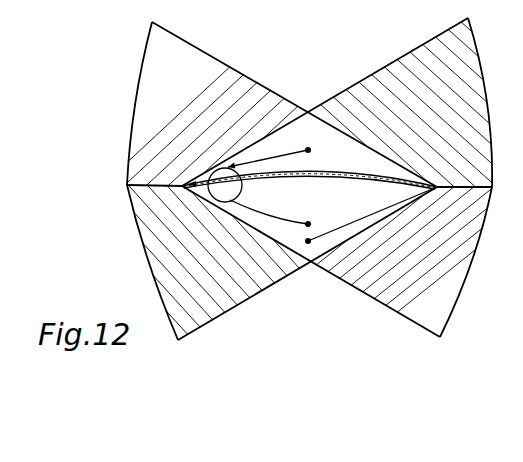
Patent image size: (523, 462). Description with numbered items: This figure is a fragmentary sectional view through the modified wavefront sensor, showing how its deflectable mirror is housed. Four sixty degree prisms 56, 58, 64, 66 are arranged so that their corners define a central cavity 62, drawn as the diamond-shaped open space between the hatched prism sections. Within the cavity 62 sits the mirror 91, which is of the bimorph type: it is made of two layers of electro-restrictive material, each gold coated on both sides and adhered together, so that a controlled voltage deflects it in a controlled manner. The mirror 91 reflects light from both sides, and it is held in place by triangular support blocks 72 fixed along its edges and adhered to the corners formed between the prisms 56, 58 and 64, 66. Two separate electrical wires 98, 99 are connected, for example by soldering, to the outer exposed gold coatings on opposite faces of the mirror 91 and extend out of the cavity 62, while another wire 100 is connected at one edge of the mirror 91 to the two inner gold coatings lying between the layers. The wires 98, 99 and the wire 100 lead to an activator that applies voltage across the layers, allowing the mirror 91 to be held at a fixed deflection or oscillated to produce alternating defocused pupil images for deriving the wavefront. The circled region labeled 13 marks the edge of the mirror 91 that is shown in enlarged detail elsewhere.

The detail area shown in FIG. 13 is at (210, 177).
The 60 degree prism 56 is at (195, 312).
The 60 degree prism 58 is at (185, 55).
The cavity 62 is at (320, 133).
The 60 degree prism 64 is at (400, 305).
The 60 degree prism 66 is at (408, 70).
The triangular support block 72 is at (425, 181).
The mirror 91 is at (332, 176).
The electrical wire 98 is at (267, 157).
The electrical wire 99 is at (260, 213).
The wire 100 is at (328, 233).